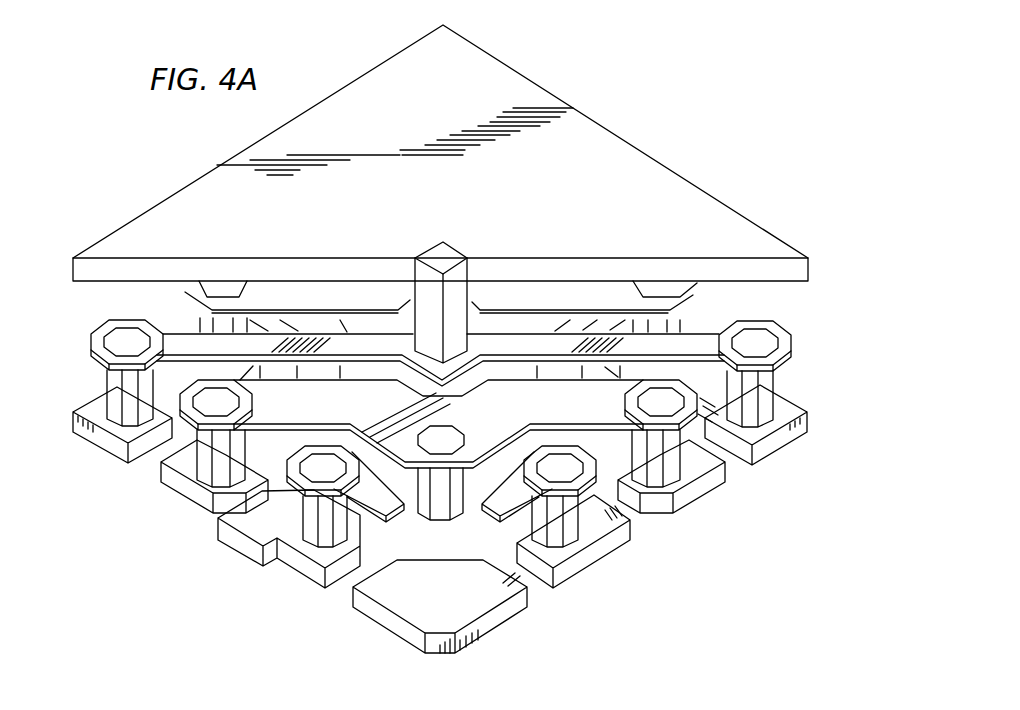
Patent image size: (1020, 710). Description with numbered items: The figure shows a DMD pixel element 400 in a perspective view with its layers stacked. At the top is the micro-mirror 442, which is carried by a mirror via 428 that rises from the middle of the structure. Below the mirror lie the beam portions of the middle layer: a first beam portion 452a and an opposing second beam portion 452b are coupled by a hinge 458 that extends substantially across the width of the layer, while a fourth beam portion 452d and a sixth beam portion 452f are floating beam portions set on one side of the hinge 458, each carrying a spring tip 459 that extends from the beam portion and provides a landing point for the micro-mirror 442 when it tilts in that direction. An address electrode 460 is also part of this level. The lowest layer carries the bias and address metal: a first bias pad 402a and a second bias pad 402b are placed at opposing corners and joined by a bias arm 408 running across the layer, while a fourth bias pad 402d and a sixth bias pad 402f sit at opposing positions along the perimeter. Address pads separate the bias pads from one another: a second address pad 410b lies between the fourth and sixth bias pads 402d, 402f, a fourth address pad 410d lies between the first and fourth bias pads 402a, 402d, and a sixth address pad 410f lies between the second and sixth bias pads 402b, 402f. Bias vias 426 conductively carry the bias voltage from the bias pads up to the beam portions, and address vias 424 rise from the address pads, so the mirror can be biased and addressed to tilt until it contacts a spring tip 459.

The DMD pixel element 400 is at (613, 91).
The micro-mirror 442 is at (657, 182).
The mirror via 428 is at (432, 250).
The address electrode 460 is at (508, 395).
The hinge 458 is at (185, 340).
The first beam portion 452a is at (88, 342).
The second beam portion 452b is at (797, 342).
The fourth beam portion 452d is at (323, 447).
The sixth beam portion 452f is at (557, 447).
The spring tip 459 is at (370, 513).
The bias via 426 is at (112, 389).
The address via 424 is at (203, 460).
The first bias pad 402a is at (95, 442).
The second bias pad 402b is at (780, 442).
The fourth bias pad 402d is at (297, 562).
The sixth bias pad 402f is at (583, 562).
The second address pad 410b is at (397, 627).
The fourth address pad 410d is at (193, 497).
The sixth address pad 410f is at (683, 497).
The bias arm 408 is at (705, 412).